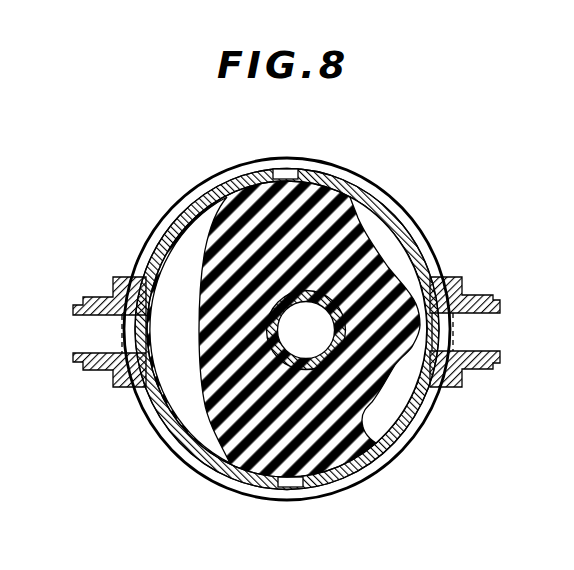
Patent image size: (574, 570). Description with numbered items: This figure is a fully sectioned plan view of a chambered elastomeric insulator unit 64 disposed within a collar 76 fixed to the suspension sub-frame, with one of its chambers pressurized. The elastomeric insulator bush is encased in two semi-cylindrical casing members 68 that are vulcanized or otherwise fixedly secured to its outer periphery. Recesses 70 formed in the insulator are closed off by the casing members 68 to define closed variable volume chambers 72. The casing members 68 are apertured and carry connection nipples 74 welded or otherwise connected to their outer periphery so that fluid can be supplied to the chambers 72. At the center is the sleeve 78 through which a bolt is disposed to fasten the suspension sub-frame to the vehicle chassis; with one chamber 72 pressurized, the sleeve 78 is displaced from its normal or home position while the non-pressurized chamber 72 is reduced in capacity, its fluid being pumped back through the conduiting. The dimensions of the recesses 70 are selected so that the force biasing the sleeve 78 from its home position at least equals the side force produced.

The chambered elastomeric insulator unit 64 is at (128, 214).
The semi-cylindrical casing members 68 is at (197, 442).
The recesses 70 is at (200, 390).
The closed variable volume chambers 72 is at (175, 388).
The connection nipples 74 is at (77, 305).
The collar 76 is at (367, 476).
The sleeve 78 is at (283, 375).